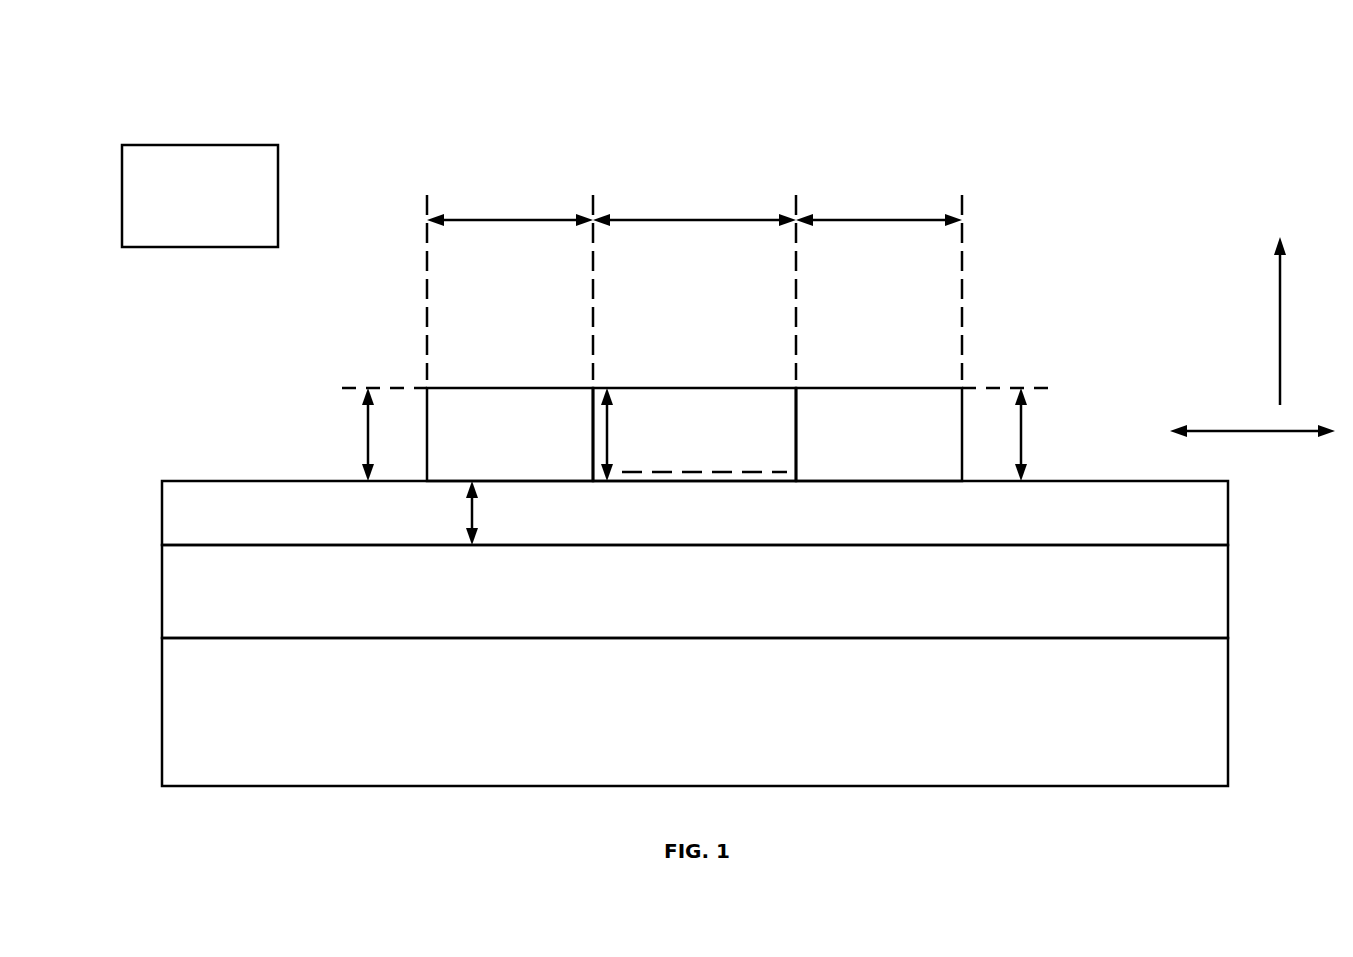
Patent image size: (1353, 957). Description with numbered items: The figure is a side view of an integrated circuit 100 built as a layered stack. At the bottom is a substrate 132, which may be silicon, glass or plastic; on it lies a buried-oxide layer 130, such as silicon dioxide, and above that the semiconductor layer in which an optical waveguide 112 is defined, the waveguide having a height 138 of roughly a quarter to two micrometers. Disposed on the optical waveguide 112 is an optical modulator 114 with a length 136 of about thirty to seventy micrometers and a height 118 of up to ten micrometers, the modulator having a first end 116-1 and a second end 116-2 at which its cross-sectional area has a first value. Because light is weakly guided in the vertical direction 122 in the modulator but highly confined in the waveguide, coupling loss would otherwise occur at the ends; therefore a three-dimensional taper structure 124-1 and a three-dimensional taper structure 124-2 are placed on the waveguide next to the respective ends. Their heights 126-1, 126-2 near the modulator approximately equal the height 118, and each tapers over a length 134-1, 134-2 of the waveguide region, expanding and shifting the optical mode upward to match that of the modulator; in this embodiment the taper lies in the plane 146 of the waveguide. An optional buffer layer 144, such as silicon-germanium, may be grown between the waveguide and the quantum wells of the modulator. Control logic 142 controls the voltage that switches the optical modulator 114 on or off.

The integrated circuit 100 is at (1060, 128).
The optical waveguide 112 is at (208, 536).
The optical modulator 114 is at (675, 464).
The end 116-1 is at (600, 387).
The end 116-2 is at (807, 387).
The height 118 is at (606, 417).
The vertical direction 122 is at (1276, 286).
The 3-D taper structure 124-1 is at (481, 469).
The 3-D taper structure 124-2 is at (850, 469).
The height 126-1 is at (367, 442).
The height 126-2 is at (1023, 442).
The buried-oxide layer 130 is at (676, 614).
The substrate 132 is at (676, 734).
The length 134-1 is at (552, 218).
The length 134-2 is at (842, 218).
The length 136 is at (657, 218).
The height 138 is at (470, 518).
The control logic 142 is at (181, 231).
The buffer layer 144 is at (770, 473).
The plane 146 is at (1244, 431).